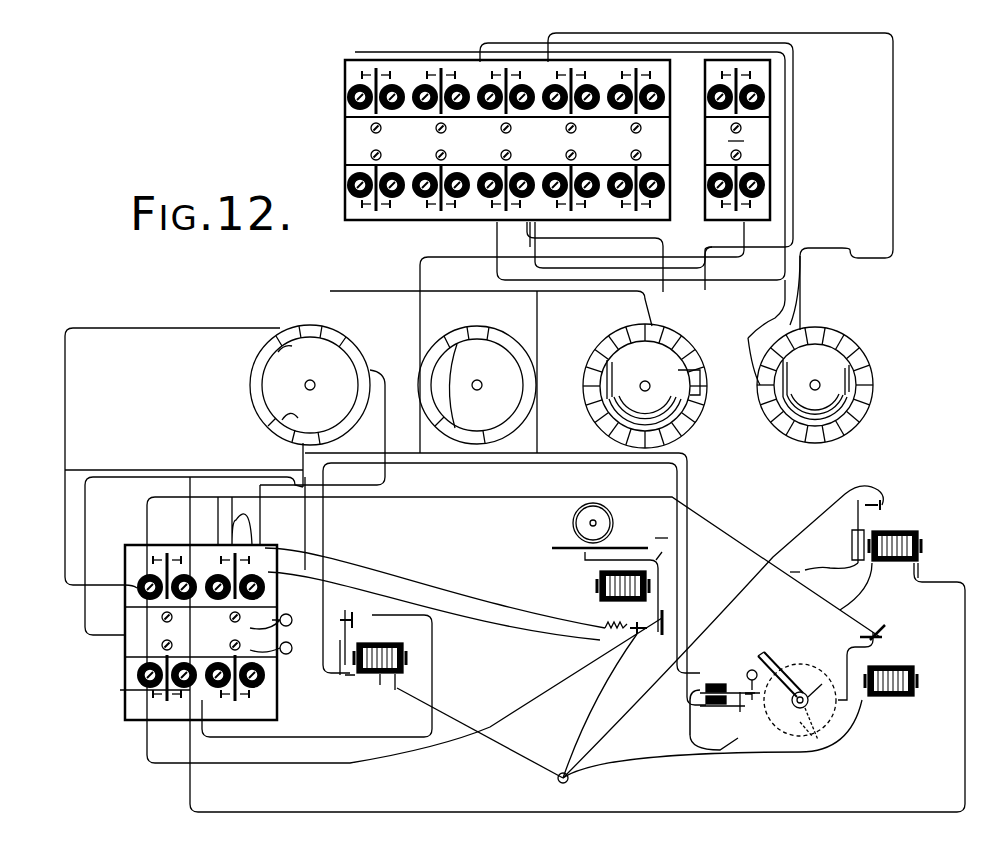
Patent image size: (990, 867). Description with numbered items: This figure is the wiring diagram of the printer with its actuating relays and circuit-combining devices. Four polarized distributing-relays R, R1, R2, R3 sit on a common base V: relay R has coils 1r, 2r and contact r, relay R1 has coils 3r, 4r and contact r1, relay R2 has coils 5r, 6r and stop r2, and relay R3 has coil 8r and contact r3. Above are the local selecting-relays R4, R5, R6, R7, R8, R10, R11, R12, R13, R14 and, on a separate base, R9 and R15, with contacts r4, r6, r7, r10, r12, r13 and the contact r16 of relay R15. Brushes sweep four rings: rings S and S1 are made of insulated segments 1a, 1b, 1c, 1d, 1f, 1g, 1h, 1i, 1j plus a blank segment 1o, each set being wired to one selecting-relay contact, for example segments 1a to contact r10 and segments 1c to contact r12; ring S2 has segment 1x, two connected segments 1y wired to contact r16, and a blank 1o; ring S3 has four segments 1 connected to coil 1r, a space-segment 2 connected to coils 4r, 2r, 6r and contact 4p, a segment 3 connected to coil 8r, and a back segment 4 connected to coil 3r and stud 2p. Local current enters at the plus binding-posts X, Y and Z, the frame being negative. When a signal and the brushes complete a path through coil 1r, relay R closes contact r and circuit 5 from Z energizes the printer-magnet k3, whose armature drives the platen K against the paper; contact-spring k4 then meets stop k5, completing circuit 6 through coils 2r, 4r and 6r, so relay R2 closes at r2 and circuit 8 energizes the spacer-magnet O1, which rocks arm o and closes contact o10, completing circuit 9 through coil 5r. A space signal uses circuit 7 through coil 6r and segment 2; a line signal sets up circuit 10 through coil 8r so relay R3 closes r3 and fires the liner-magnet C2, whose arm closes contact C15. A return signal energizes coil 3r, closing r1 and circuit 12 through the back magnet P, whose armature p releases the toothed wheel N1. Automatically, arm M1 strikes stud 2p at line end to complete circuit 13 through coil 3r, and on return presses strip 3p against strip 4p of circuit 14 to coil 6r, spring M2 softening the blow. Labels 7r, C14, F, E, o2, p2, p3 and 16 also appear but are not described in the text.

The local selecting-relay R4 is at (383, 108).
The local selecting-relay R5 is at (448, 108).
The local selecting-relay R6 is at (513, 108).
The local selecting-relay R7 is at (578, 108).
The local selecting-relay R8 is at (652, 85).
The local selecting-relay R9 is at (765, 95).
The local selecting-relay R10 is at (362, 205).
The local selecting-relay R11 is at (432, 205).
The local selecting-relay R12 is at (498, 205).
The local selecting-relay R13 is at (575, 170).
The local selecting-relay R14 is at (664, 185).
The local selecting-relay R15 is at (765, 182).
The relay contact r4 is at (372, 72).
The relay contact stop r6 is at (500, 72).
The relay contact r7 is at (568, 72).
The relay contact r10 is at (385, 208).
The relay contact r12 is at (520, 208).
The relay contact r13 is at (712, 208).
The relay contact r16 is at (758, 208).
The ring S3 is at (330, 332).
The ring S2 is at (490, 330).
The ring S′ S1 is at (652, 326).
The ring S is at (822, 300).
The segment 1 is at (370, 368).
The space-segment 2 is at (305, 438).
The segment 3 is at (280, 432).
The back segment 4 is at (283, 332).
The blank segment 1o is at (318, 330).
The segment 1x is at (433, 412).
The segment 1y is at (452, 338).
The insulated segment 1a is at (838, 338).
The insulated segment 1b is at (850, 348).
The insulated segment 1c is at (662, 334).
The insulated segment 1d is at (678, 345).
The insulated segment 1f is at (874, 408).
The insulated segment 1g is at (594, 414).
The insulated segment 1h is at (584, 396).
The insulated segment 1i is at (606, 336).
The insulated segment 1j is at (622, 330).
The circuit 5 is at (430, 592).
The circuit 6 is at (490, 618).
The circuit 7 is at (87, 515).
The circuit 8 is at (744, 640).
The circuit 9 is at (530, 722).
The circuit 10 is at (324, 540).
The circuit 12 is at (462, 506).
The circuit 13 is at (592, 470).
The circuit 14 is at (688, 552).
The conductor 16 is at (260, 520).
The common base V is at (128, 692).
The distributing-relay R is at (245, 560).
The distributing-relay R′ R1 is at (172, 560).
The distributing-relay R2 is at (160, 712).
The distributing-relay R3 is at (265, 700).
The relay contact r is at (218, 560).
The relay contact r′ r1 is at (150, 557).
The relay stop r2 is at (190, 705).
The relay contact r3 is at (250, 705).
The magnet-coil 1r is at (226, 612).
The magnet-coil 2r is at (262, 595).
The return relay-magnet coil 3r is at (138, 585).
The magnet-coil 4r is at (160, 612).
The magnet-coil 5r is at (138, 675).
The spacer-actuating relay-magnet coil 6r is at (232, 640).
The terminal 7r is at (220, 705).
The magnet-coil 8r is at (310, 690).
The binding-post X is at (290, 616).
The binding-post Y is at (290, 652).
The binding-post Z is at (573, 788).
The electromagnet coil C14 is at (350, 655).
The contact C15 is at (352, 625).
The liner-magnet C2 is at (380, 690).
The signal lamp F is at (572, 522).
The contact bar E is at (622, 556).
The platen K is at (592, 560).
The printer-magnet k3 is at (598, 594).
The contact-spring k4 is at (688, 613).
The contact stop k5 is at (640, 634).
The spacer-magnet O′ O1 is at (905, 535).
The rocking arm o is at (852, 545).
The contact o2 is at (865, 505).
The contact o10 is at (882, 500).
The back magnet P is at (898, 668).
The armature p is at (815, 688).
The contact p2 is at (840, 700).
The contact p3 is at (875, 642).
The toothed wheel N′ N1 is at (822, 675).
The arm M′ M1 is at (770, 660).
The spring M2 is at (790, 736).
The contact-stud 2′ 2p is at (748, 672).
The contact-strip 3′ 3p is at (738, 718).
The contact-strip 4′ 4p is at (716, 680).